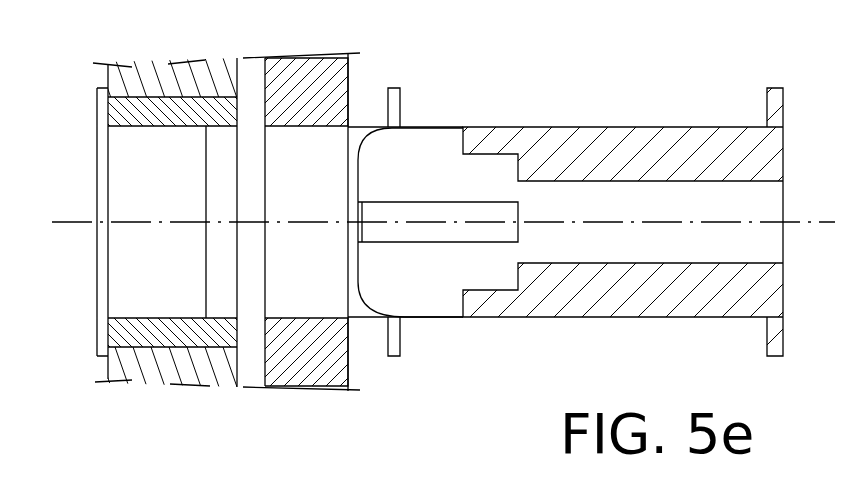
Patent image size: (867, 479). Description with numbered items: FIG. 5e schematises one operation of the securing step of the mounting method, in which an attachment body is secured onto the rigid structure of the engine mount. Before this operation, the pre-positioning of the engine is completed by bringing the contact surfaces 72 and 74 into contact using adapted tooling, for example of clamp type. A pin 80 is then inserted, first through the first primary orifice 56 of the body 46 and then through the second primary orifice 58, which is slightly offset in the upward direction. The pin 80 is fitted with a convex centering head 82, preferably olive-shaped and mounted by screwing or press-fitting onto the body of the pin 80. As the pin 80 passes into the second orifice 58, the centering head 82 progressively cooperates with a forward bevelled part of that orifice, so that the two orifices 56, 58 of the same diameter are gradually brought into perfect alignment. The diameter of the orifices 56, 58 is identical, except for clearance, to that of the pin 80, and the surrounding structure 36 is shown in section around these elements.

The housing 36 is at (145, 358).
The body 46 is at (317, 133).
The first primary orifice 56 is at (285, 75).
The second primary orifice 58 is at (137, 127).
The contact surface 72 is at (240, 336).
The contact surface 74 is at (262, 82).
The pin 80 is at (582, 124).
The convex centering head 82 is at (213, 127).